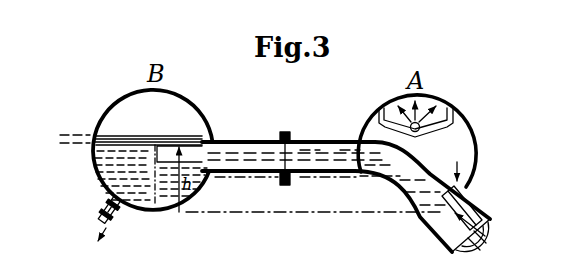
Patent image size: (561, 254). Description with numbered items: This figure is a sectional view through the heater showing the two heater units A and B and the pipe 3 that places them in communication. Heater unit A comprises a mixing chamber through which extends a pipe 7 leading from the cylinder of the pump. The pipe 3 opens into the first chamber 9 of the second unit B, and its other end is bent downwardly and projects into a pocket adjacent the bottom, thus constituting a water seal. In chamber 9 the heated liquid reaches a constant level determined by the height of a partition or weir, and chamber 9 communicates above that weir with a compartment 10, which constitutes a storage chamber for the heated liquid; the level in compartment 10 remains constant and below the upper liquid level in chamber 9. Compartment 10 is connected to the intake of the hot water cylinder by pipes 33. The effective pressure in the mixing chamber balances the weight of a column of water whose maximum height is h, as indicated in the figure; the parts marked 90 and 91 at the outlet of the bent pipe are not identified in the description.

The pipe 3 is at (323, 140).
The pipe 7 is at (423, 123).
The first chamber 9 is at (177, 194).
The compartment 10 is at (117, 159).
The pipes 33 is at (101, 217).
The end cap 90 is at (444, 233).
The inner tube 91 is at (474, 197).